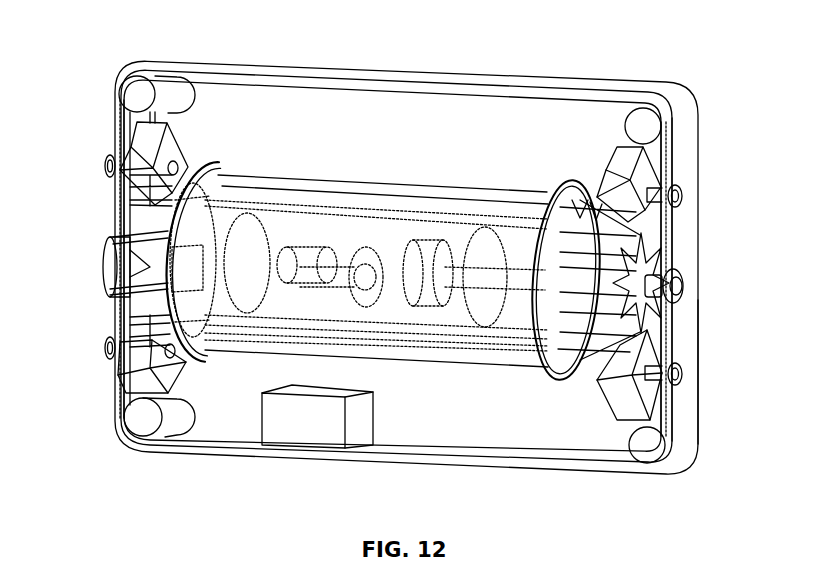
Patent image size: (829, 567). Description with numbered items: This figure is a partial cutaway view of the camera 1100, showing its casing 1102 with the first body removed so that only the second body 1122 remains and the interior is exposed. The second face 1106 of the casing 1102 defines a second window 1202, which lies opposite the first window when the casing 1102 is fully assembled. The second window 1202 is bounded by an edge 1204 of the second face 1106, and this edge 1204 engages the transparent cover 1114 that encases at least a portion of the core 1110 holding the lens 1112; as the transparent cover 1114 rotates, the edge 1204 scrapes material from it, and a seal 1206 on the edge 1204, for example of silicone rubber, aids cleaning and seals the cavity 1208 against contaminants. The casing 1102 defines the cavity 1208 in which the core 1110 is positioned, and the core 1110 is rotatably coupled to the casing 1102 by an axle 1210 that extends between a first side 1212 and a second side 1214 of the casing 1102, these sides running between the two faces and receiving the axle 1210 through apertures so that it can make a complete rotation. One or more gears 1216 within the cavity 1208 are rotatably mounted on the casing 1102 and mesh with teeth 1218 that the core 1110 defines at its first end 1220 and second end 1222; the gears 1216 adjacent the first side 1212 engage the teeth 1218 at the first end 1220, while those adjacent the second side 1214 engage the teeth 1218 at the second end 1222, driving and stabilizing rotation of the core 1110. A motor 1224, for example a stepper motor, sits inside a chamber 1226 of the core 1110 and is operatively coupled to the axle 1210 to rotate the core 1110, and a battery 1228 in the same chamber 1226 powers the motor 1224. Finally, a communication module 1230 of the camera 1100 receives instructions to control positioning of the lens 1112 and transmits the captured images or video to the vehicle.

The camera 1100 is at (735, 78).
The casing 1102 is at (127, 91).
The second face 1106 is at (522, 60).
The core 1110 is at (508, 322).
The lens 1112 is at (367, 283).
The transparent cover 1114 is at (513, 190).
The second body 1122 is at (688, 146).
The second window 1202 is at (294, 157).
The edge 1204 is at (348, 168).
The seal 1206 is at (430, 172).
The cavity 1208 is at (212, 128).
The axle 1210 is at (655, 283).
The first side 1212 is at (120, 128).
The second side 1214 is at (688, 432).
The gears 1216 is at (134, 165).
The teeth 1218 is at (128, 278).
The first end 1220 is at (105, 305).
The second end 1222 is at (588, 385).
The motor 1224 is at (423, 297).
The chamber 1226 is at (337, 240).
The battery 1228 is at (300, 273).
The communication module 1230 is at (255, 422).